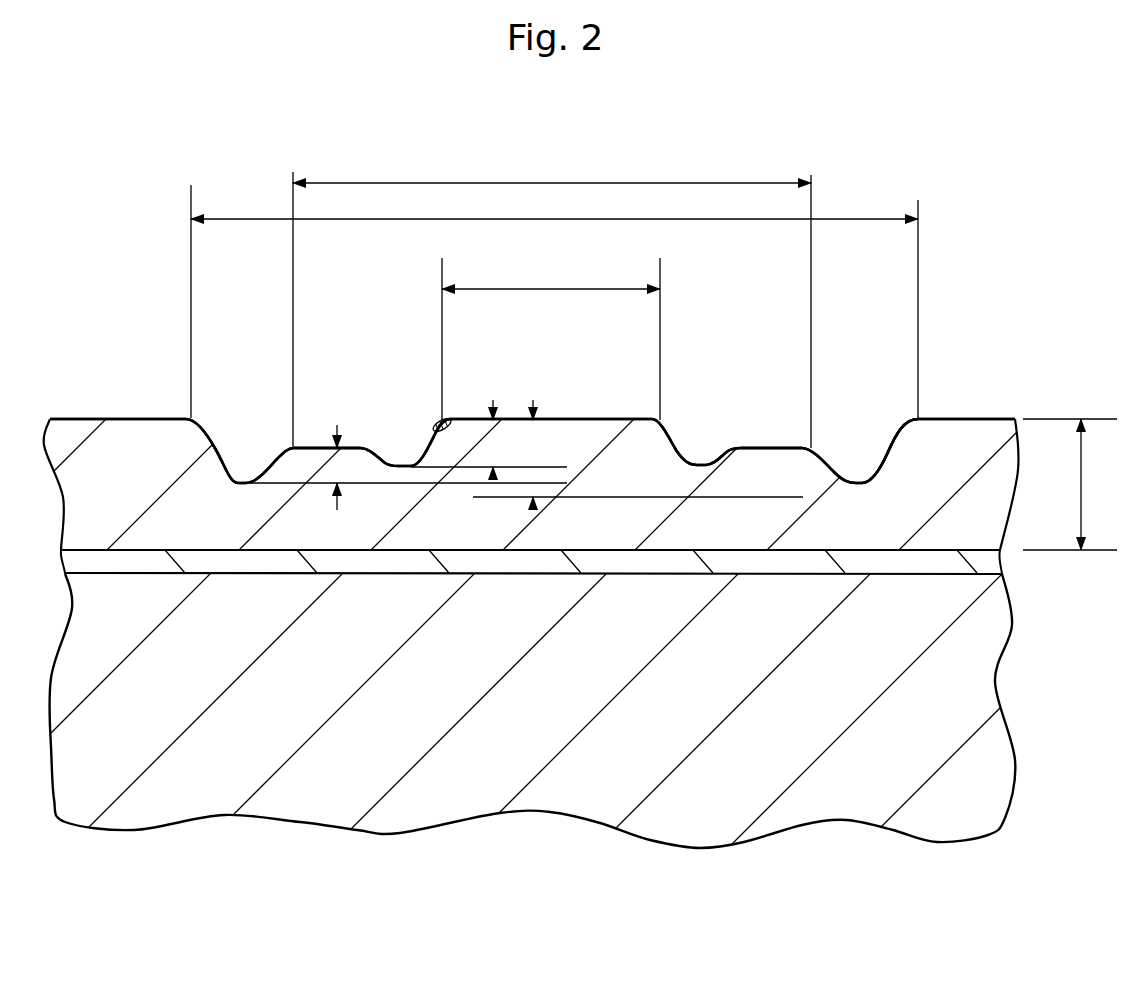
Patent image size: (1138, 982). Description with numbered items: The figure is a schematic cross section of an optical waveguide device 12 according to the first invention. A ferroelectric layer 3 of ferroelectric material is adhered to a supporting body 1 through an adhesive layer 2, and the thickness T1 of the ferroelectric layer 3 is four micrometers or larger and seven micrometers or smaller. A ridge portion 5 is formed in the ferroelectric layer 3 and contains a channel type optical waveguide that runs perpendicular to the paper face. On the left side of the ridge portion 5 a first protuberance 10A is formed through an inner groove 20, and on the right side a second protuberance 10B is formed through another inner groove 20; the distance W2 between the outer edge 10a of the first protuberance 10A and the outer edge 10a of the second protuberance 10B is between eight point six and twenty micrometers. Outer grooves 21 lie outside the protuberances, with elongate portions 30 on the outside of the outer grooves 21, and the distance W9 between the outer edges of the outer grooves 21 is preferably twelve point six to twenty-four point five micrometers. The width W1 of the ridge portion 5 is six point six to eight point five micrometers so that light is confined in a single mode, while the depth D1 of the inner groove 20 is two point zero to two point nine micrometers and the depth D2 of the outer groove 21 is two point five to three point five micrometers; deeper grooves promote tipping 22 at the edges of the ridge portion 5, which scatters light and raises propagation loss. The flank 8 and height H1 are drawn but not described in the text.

The supporting body 1 is at (981, 682).
The adhesive layer 2 is at (981, 564).
The ferroelectric layer 3 is at (1018, 407).
The ridge portion 5 is at (588, 393).
The side wall 8 is at (887, 443).
The optical waveguide device 12 is at (973, 403).
The inner groove 20 is at (397, 422).
The outer groove 21 is at (248, 418).
The tipping 22 is at (442, 417).
The first protuberance 10A is at (355, 458).
The second protuberance 10B is at (793, 430).
The outer edge of protuberance 10a is at (293, 450).
The elongate portion 30 is at (117, 432).
The width of ridge portion W1 is at (551, 339).
The distance of outer edges of first and second protuberances W2 is at (552, 303).
The distance between outer edges of outer grooves W9 is at (554, 301).
The thickness of ferroelectric layer T1 is at (1070, 484).
The height H1 is at (335, 467).
The depth of inner groove D1 is at (495, 445).
The depth of outer groove D2 is at (533, 445).